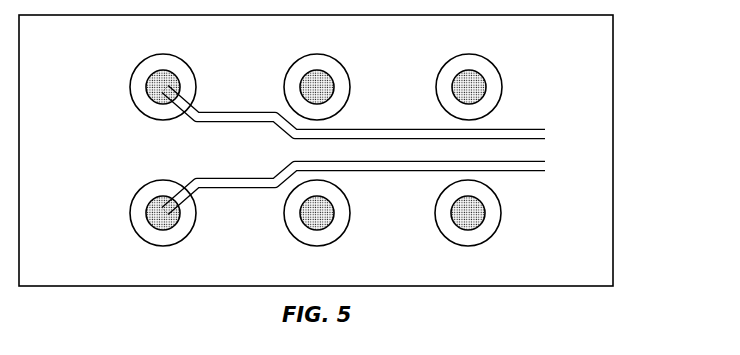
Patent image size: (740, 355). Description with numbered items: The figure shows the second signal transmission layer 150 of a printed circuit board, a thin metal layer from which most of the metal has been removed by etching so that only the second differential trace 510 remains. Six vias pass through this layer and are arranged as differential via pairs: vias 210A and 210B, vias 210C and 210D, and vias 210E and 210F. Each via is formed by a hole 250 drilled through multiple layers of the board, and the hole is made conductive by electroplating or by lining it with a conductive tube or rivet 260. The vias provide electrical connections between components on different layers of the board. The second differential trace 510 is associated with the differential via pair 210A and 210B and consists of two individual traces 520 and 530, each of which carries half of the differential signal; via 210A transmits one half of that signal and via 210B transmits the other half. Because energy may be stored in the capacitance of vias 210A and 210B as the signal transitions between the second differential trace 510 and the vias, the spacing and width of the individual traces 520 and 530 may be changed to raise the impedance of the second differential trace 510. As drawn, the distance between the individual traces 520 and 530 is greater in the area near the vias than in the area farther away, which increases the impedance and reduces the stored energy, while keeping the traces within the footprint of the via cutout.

The second signal transmission layer 150 is at (638, 130).
The via 210A is at (196, 73).
The via 210B is at (165, 246).
The via 210C is at (318, 55).
The via 210D is at (317, 246).
The via 210E is at (470, 55).
The via 210F is at (468, 246).
The hole 250 is at (180, 79).
The conductive tube or rivet 260 is at (193, 82).
The second differential trace 510 is at (385, 150).
The individual trace 520 is at (505, 130).
The individual trace 530 is at (505, 170).